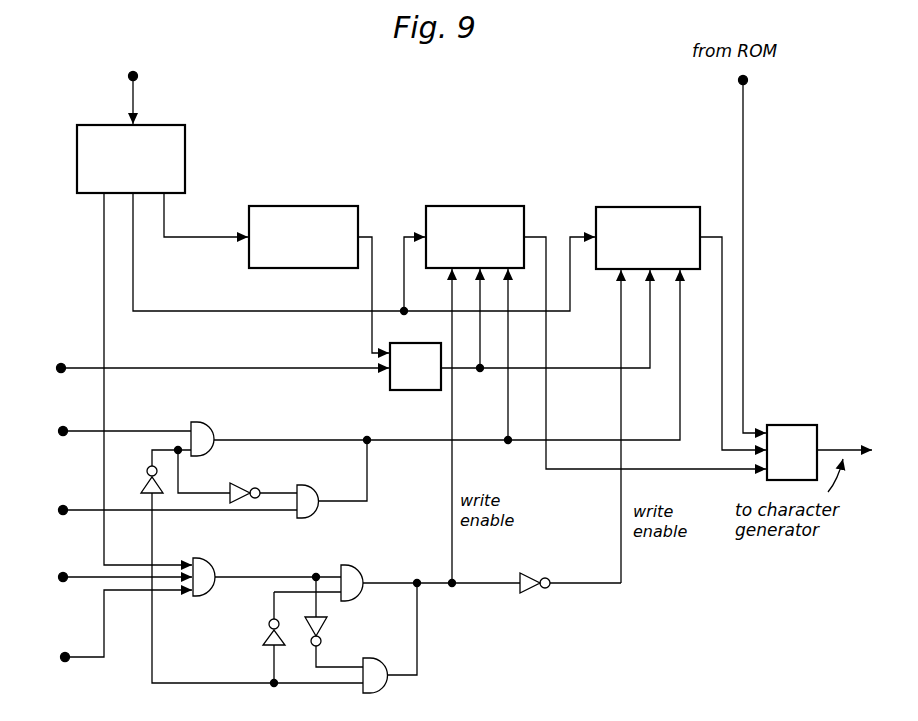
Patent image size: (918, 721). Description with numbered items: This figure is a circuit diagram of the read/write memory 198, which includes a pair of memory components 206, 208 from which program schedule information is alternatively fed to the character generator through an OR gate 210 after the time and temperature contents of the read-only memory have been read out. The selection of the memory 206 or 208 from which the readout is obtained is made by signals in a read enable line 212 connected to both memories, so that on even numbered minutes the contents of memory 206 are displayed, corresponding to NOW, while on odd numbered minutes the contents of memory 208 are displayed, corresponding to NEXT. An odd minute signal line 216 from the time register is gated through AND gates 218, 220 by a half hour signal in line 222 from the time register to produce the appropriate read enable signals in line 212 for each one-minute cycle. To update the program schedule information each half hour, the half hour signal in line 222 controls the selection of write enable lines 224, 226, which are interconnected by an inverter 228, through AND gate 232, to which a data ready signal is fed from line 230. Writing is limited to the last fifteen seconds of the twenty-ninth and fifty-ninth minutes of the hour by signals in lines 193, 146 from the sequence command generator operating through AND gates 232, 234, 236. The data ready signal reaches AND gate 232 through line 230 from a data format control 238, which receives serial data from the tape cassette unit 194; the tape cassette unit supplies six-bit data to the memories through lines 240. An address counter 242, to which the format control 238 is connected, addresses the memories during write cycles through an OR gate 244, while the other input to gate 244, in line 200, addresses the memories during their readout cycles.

The tape cassette unit 194 is at (159, 78).
The data format control 238 is at (77, 175).
The data ready signal line 230 is at (104, 256).
The data lines 240 is at (152, 311).
The address counter 242 is at (307, 208).
The read/write memory 198 is at (532, 171).
The memory component 206 is at (488, 205).
The memory component 208 is at (660, 210).
The OR gate 210 is at (800, 420).
The OR gate 244 is at (390, 386).
The readout address line 200 is at (82, 368).
The odd minute signal line 216 is at (77, 430).
The AND gate 218 is at (213, 427).
The read enable line 212 is at (398, 442).
The half hour signal line 222 is at (82, 508).
The AND gate 220 is at (310, 518).
The AND gate 232 is at (205, 598).
The signal line 193 is at (86, 582).
The signal line 146 is at (86, 660).
The AND gate 234 is at (357, 602).
The AND gate 236 is at (390, 694).
The write enable line 224 is at (437, 586).
The inverter 228 is at (523, 576).
The write enable line 226 is at (621, 582).